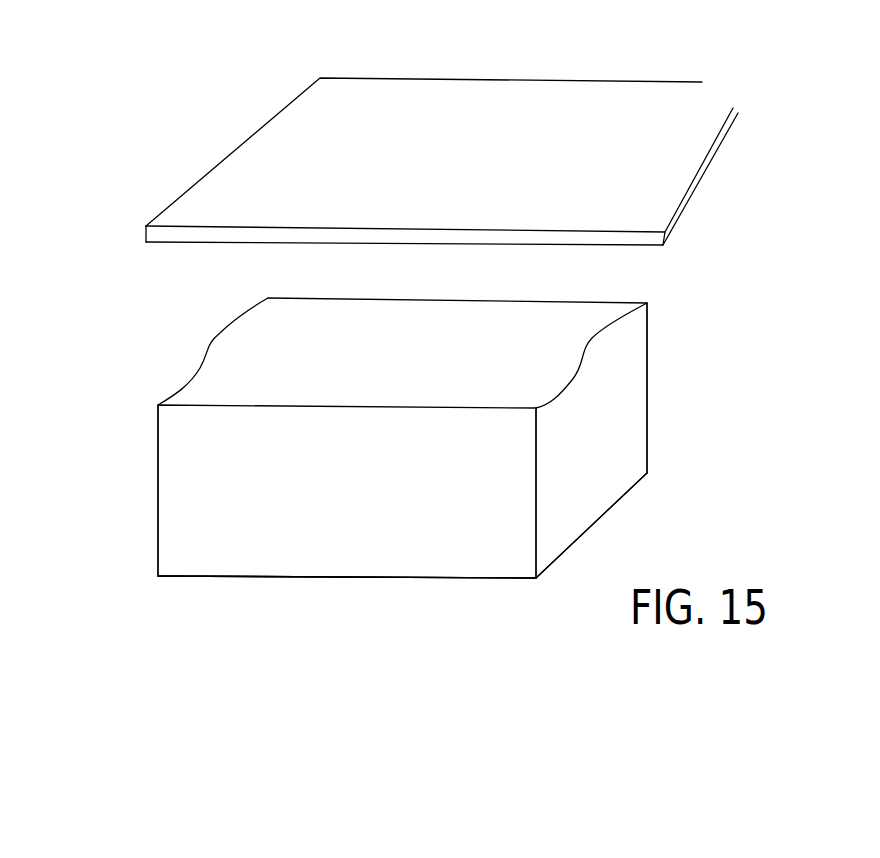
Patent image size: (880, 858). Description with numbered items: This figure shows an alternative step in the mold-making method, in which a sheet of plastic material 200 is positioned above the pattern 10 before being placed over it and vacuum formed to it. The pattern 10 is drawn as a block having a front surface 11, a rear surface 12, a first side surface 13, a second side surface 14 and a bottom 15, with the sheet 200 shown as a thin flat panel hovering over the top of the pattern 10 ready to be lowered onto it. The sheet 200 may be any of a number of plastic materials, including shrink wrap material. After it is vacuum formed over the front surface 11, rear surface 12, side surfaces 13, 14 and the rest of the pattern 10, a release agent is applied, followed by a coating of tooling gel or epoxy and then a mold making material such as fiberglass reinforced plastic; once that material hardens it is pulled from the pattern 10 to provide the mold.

The cover plate 200 is at (415, 115).
The pattern 10 is at (340, 602).
The front surface 11 is at (485, 562).
The rear surface 12 is at (647, 355).
The first side surface 13 is at (620, 458).
The second side surface 14 is at (158, 462).
The bottom 15 is at (212, 577).